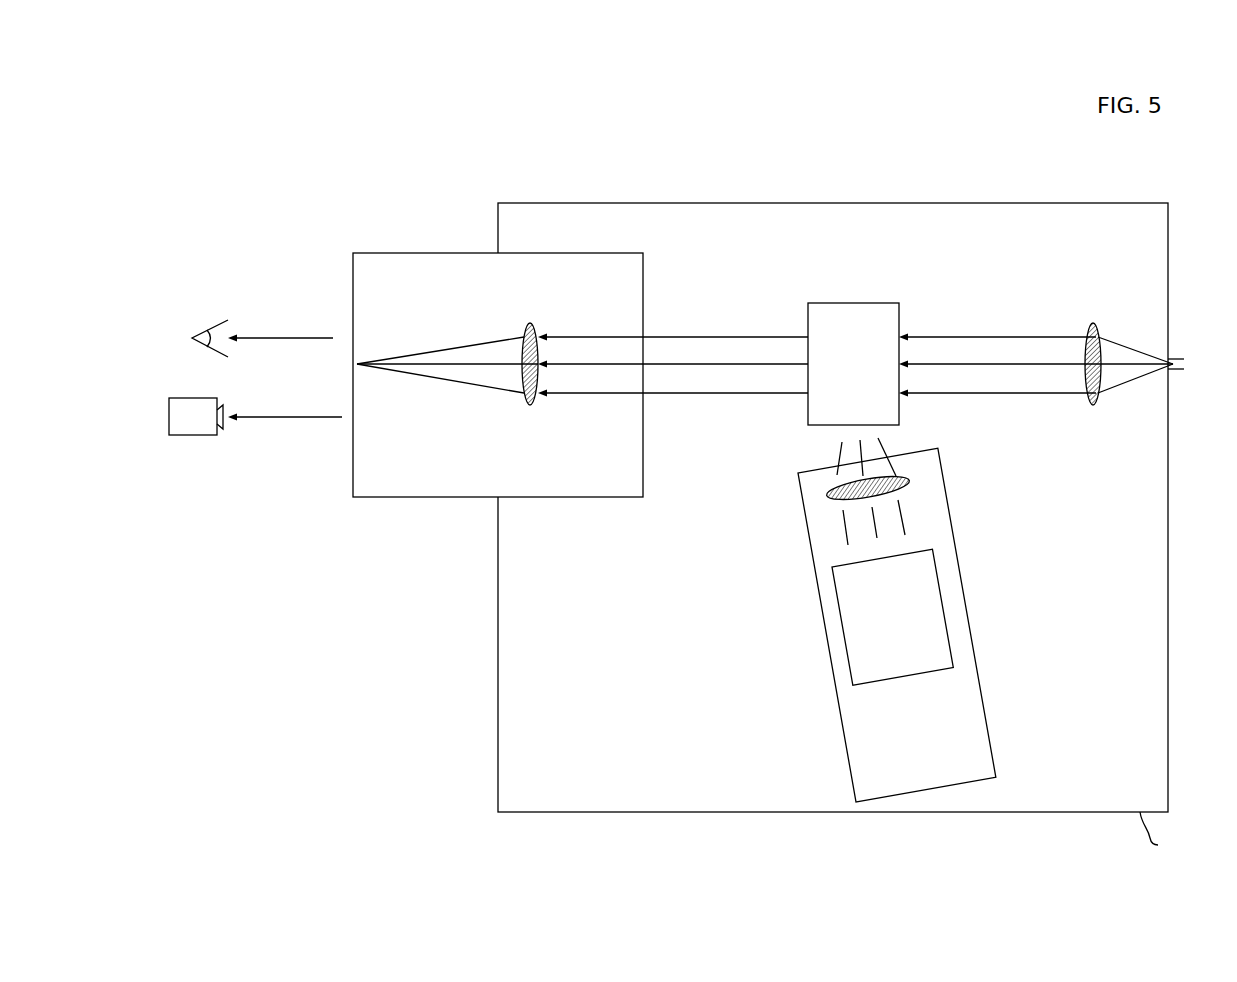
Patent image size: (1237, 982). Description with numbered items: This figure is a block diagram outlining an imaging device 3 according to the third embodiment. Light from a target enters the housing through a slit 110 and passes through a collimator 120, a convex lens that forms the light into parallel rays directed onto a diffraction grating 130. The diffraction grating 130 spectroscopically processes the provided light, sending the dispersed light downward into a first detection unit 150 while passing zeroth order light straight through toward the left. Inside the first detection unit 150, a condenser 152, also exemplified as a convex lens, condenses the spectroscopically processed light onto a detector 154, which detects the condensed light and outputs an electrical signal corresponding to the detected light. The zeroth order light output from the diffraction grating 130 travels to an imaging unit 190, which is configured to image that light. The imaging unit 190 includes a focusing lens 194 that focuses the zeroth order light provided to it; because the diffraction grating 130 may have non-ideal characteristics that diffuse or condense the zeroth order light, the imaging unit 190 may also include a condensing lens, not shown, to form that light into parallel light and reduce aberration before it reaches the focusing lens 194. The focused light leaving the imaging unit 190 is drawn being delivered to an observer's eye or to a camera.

The imaging device 3 is at (352, 132).
The slit 110 is at (1179, 371).
The collimator 120 is at (1093, 402).
The diffraction grating 130 is at (853, 364).
The first detection unit 150 is at (932, 625).
The condenser 152 is at (910, 479).
The detector 154 is at (892, 617).
The imaging unit 190 is at (498, 375).
The focusing lens 194 is at (531, 405).